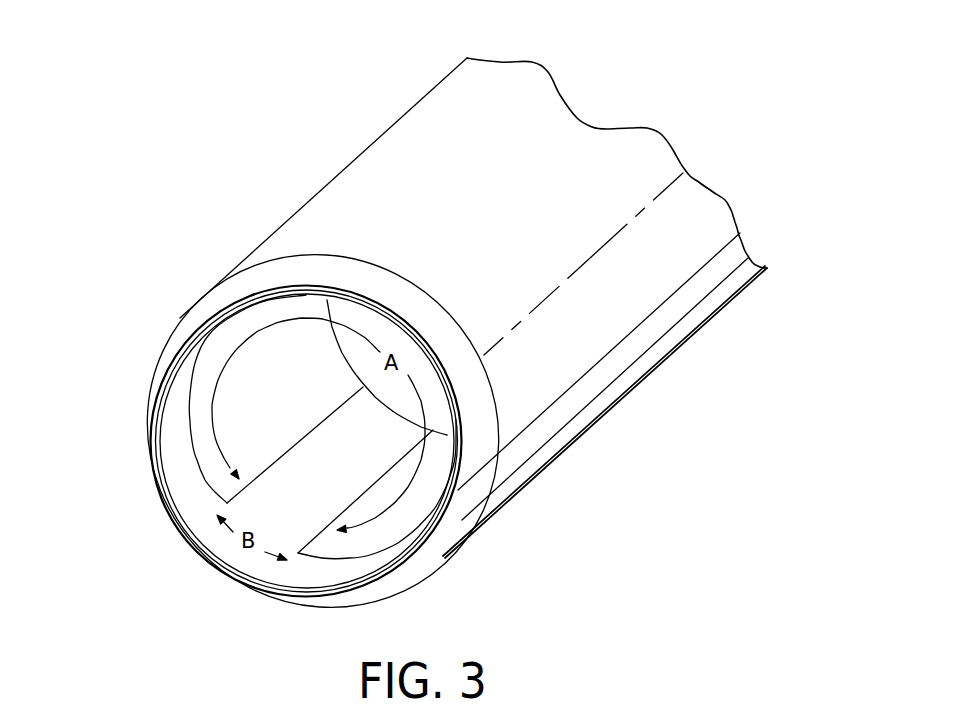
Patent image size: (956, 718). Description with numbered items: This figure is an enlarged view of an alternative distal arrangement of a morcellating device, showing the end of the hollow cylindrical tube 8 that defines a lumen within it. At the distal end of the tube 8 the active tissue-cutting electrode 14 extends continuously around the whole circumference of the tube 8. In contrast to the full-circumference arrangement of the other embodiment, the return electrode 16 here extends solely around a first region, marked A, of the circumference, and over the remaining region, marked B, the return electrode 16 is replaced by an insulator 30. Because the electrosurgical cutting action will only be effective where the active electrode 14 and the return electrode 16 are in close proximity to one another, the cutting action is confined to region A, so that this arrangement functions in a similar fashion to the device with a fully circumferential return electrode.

The cylindrical tube 8 is at (650, 339).
The active tissue-cutting electrode 14 is at (150, 468).
The return electrode 16 is at (248, 391).
The insulator 30 is at (307, 520).